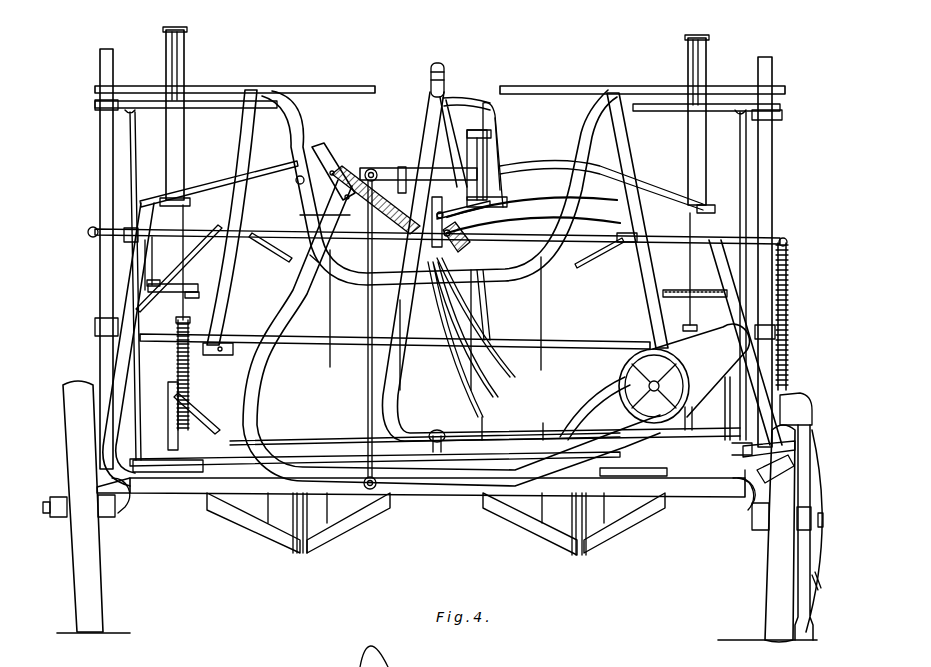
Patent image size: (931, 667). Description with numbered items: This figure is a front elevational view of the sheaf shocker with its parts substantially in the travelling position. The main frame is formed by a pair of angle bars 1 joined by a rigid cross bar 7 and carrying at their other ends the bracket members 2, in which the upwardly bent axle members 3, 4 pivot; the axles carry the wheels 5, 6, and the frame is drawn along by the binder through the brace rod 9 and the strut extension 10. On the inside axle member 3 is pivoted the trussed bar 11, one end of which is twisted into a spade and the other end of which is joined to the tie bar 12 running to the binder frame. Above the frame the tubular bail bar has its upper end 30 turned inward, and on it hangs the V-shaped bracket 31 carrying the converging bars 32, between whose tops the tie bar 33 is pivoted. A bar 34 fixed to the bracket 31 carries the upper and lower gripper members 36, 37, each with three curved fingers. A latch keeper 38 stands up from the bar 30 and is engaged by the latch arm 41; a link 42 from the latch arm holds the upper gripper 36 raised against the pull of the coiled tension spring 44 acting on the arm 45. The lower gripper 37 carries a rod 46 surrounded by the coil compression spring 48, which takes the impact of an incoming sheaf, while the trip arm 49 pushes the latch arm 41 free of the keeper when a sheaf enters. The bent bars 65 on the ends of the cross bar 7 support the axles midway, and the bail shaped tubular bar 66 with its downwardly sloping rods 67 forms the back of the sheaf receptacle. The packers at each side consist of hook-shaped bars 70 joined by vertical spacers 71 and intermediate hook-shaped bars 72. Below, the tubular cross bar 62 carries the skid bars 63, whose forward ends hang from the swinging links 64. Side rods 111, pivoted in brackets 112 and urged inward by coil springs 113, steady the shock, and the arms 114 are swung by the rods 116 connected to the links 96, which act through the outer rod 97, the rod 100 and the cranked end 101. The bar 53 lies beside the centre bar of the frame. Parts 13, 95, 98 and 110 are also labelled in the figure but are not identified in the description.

The angle bars 1 is at (395, 468).
The bracket members 2 is at (130, 495).
The inside axle member 3 is at (748, 520).
The axle member 4 is at (100, 284).
The wheel 5 is at (766, 580).
The wheel 6 is at (95, 578).
The cross bar 7 is at (190, 482).
The brace rod 9 is at (470, 490).
The strut extension 10 is at (742, 498).
The trussed bar 11 is at (806, 400).
The tie bar 12 is at (808, 395).
The drum roller 13 is at (655, 382).
The upper end of tubular bar 30 is at (386, 168).
The V-shaped bracket 31 is at (470, 235).
The bars 32 is at (449, 95).
The tie bar 33 is at (398, 318).
The bar 34 is at (428, 266).
The upper gripper member 36 is at (575, 165).
The lower gripper member 37 is at (452, 367).
The latch keeper 38 is at (467, 151).
The latch arm 41 is at (497, 130).
The link 42 is at (503, 148).
The coiled tension spring 44 is at (338, 160).
The arm 45 is at (478, 213).
The rod 46 is at (388, 238).
The coil compression spring 48 is at (353, 222).
The trip arm 49 is at (487, 298).
The bar 53 is at (366, 380).
The tubular cross bar 62 is at (258, 408).
The skid bars 63 is at (357, 525).
The swinging links 64 is at (293, 530).
The bent bars 65 is at (126, 360).
The bail shaped tubular bar 66 is at (356, 278).
The rods 67 is at (328, 297).
The hook-shaped bars 70 is at (333, 87).
The vertical spacers 71 is at (238, 163).
The intermediate hook-shaped bars 72 is at (283, 229).
The inner rod 95 is at (178, 73).
The links 96 is at (186, 38).
The outer rod 97 is at (186, 138).
The plate 98 is at (168, 433).
The rod 100 is at (170, 403).
The cranked end 101 is at (212, 424).
The threaded rod 110 is at (189, 378).
The side rods 111 is at (268, 250).
The brackets 112 is at (178, 283).
The coil springs 113 is at (690, 298).
The arms 114 is at (275, 168).
The rods 116 is at (170, 152).